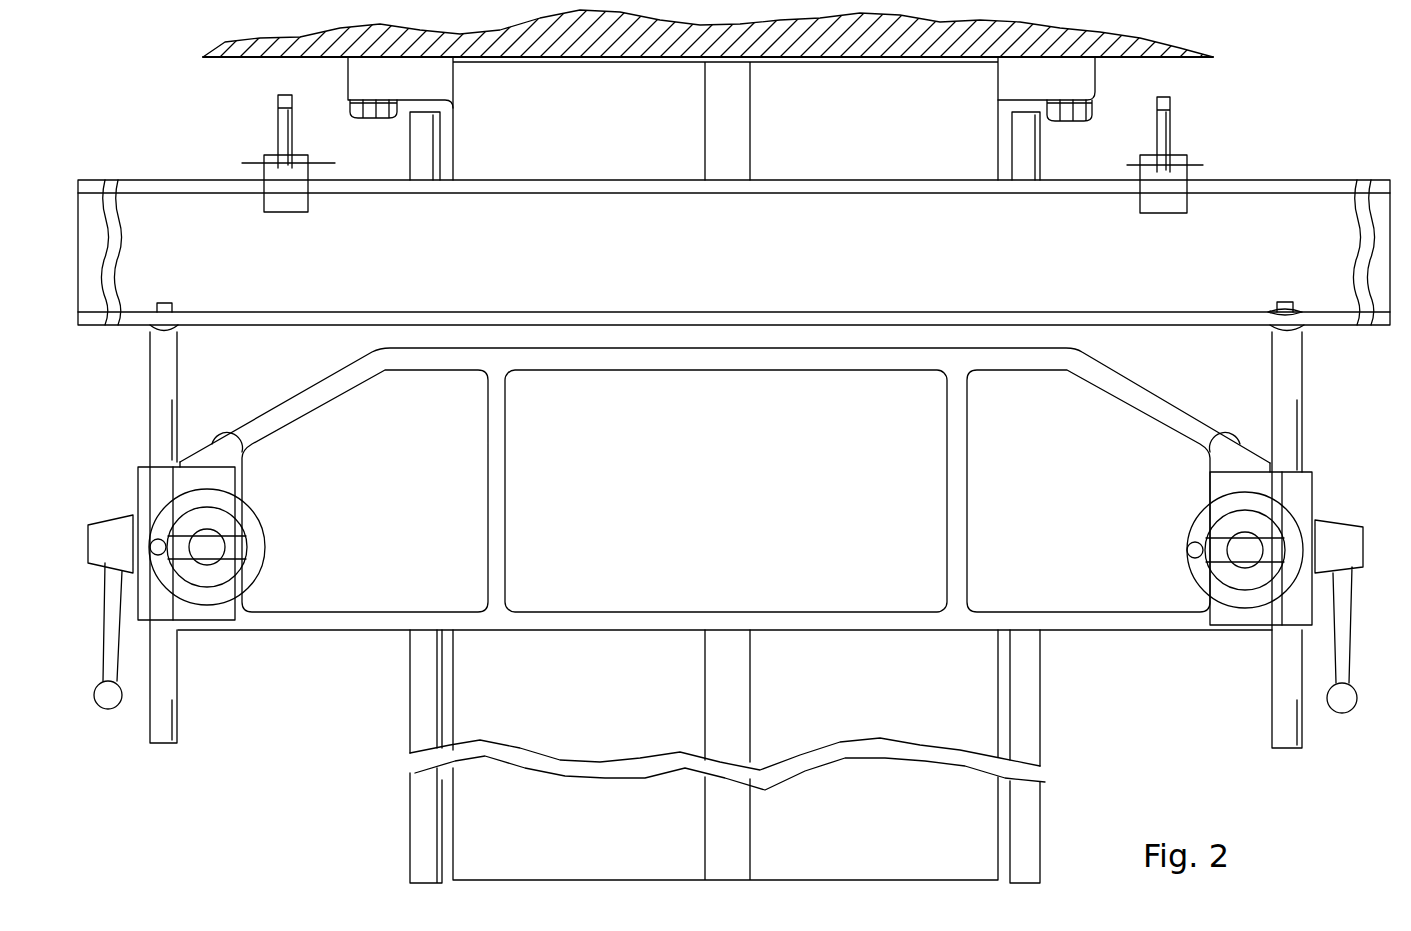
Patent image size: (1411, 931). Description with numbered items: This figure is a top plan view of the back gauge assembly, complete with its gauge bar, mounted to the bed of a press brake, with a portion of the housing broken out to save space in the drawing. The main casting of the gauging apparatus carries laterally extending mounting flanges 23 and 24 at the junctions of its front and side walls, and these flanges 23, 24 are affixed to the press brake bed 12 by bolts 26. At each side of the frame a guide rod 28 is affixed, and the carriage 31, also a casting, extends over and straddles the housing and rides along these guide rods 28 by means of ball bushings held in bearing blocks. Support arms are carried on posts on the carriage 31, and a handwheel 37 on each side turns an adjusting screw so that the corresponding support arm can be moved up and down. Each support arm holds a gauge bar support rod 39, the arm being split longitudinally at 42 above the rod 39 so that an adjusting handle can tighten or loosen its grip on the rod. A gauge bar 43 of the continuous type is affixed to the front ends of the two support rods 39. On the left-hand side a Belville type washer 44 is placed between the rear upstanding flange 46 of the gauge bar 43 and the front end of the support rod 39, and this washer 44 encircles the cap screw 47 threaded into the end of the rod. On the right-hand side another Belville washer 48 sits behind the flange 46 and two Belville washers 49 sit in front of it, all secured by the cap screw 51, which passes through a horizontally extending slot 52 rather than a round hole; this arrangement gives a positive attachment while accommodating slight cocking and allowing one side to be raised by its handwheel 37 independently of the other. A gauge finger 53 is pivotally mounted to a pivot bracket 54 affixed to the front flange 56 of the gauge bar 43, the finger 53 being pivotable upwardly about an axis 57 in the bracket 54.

The press brake bed 12 is at (1175, 50).
The mounting flange 23 is at (362, 75).
The mounting flange 24 is at (1085, 83).
The bolt 26 is at (377, 116).
The guide rod 28 is at (418, 718).
The carriage 31 is at (301, 660).
The handwheel 37 is at (252, 523).
The gauge bar support rod 39 is at (160, 391).
The longitudinal split 42 is at (170, 490).
The gauge bar 43 is at (781, 258).
The Belville washer 44 is at (178, 331).
The rear upstanding flange 46 is at (350, 313).
The cap screw 47 is at (168, 303).
The Belville washer 48 is at (1296, 333).
The Belville washers 49 is at (1296, 311).
The cap screw 51 is at (1284, 301).
The horizontally extending slot 52 is at (1278, 312).
The gauge finger 53 is at (283, 122).
The pivot bracket 54 is at (293, 193).
The front flange 56 is at (628, 185).
The pivot axis 57 is at (255, 163).